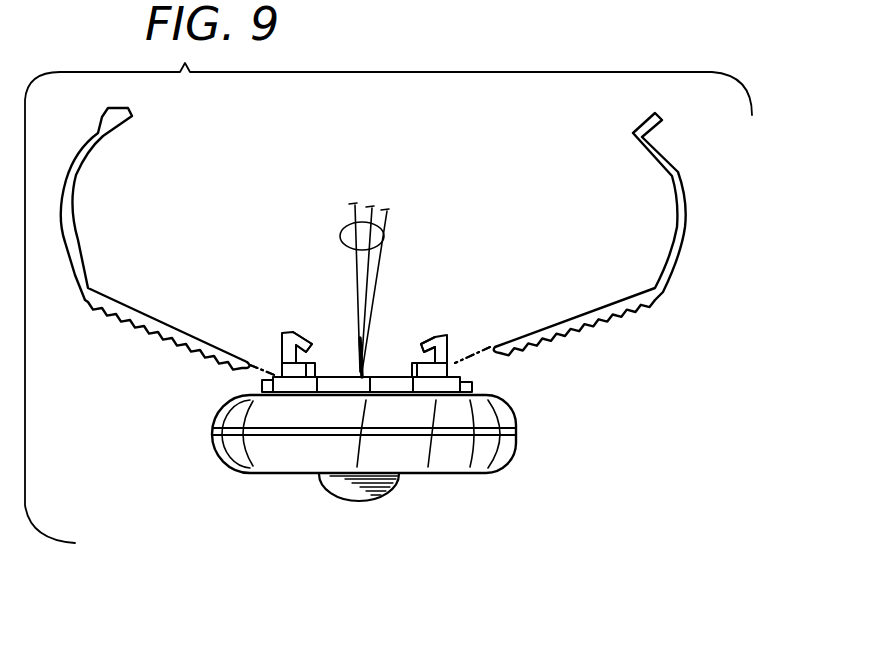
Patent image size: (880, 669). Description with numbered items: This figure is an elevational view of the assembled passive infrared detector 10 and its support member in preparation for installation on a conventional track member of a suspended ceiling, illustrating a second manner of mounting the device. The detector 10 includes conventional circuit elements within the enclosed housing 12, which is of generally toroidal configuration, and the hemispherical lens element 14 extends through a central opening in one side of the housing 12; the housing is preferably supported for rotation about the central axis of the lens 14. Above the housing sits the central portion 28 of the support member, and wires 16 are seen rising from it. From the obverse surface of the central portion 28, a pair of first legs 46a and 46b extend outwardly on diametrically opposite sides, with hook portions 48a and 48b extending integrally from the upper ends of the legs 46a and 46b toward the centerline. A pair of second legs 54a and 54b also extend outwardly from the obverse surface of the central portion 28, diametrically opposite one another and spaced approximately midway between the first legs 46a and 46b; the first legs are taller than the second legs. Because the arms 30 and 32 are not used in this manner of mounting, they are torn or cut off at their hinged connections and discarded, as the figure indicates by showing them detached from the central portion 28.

The passive infrared detector 10 is at (246, 494).
The housing 12 is at (455, 453).
The hemispherical lens element 14 is at (360, 490).
The wires 16 is at (387, 247).
The central portion 28 is at (473, 382).
The arm 30 is at (63, 239).
The arm 32 is at (677, 222).
The first leg 46a is at (277, 352).
The first leg 46b is at (453, 353).
The hook portion 48a is at (310, 340).
The hook portion 48b is at (428, 347).
The second leg 54a is at (318, 364).
The second leg 54b is at (400, 367).